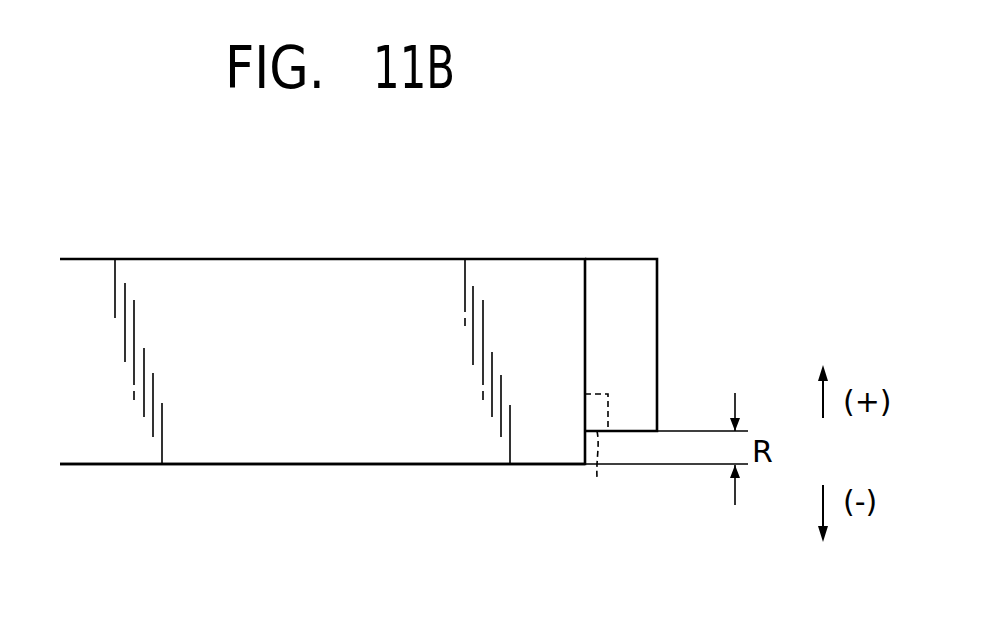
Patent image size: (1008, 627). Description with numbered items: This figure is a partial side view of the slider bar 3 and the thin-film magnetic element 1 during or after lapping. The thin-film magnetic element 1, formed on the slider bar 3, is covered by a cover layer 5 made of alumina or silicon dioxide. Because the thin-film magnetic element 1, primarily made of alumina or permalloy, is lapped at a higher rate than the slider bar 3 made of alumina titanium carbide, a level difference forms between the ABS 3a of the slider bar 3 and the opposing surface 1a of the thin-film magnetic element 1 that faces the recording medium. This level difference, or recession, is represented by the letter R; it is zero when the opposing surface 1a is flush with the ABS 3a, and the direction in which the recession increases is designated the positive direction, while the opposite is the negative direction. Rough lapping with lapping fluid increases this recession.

The thin-film magnetic element 1 is at (590, 403).
The opposing surface of the thin-film magnetic element 1a is at (598, 494).
The slider bar 3 is at (287, 300).
The ABS of the slider bar 3a is at (375, 465).
The cover layer 5 is at (645, 283).